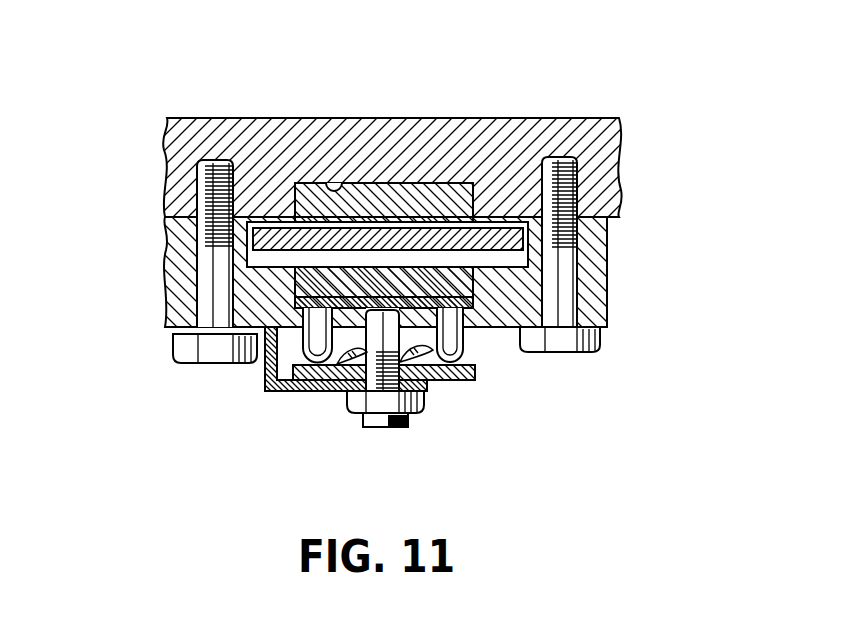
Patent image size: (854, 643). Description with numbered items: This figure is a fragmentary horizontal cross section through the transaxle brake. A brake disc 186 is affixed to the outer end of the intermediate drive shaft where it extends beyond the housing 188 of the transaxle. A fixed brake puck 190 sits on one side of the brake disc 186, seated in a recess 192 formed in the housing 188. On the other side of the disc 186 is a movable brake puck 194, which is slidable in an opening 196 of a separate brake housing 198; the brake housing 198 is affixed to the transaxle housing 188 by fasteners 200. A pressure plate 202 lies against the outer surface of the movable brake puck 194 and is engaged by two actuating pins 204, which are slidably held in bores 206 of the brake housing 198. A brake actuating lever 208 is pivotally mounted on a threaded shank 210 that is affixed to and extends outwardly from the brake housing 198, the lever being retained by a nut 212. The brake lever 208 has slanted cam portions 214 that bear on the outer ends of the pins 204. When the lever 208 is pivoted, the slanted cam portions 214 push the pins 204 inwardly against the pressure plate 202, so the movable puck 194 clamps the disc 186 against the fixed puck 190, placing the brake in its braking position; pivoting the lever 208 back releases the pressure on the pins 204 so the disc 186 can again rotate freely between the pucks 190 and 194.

The brake disc 186 is at (515, 236).
The housing 188 is at (613, 142).
The fixed brake puck 190 is at (398, 182).
The recess 192 is at (340, 183).
The movable brake puck 194 is at (543, 323).
The opening 196 is at (306, 291).
The brake housing 198 is at (162, 328).
The fasteners 200 is at (208, 281).
The pressure plate 202 is at (442, 372).
The actuating pins 204 is at (305, 363).
The bores 206 is at (465, 331).
The brake actuating lever 208 is at (477, 378).
The threaded shank 210 is at (385, 424).
The nut 212 is at (358, 414).
The slanted cam portions 214 is at (348, 350).